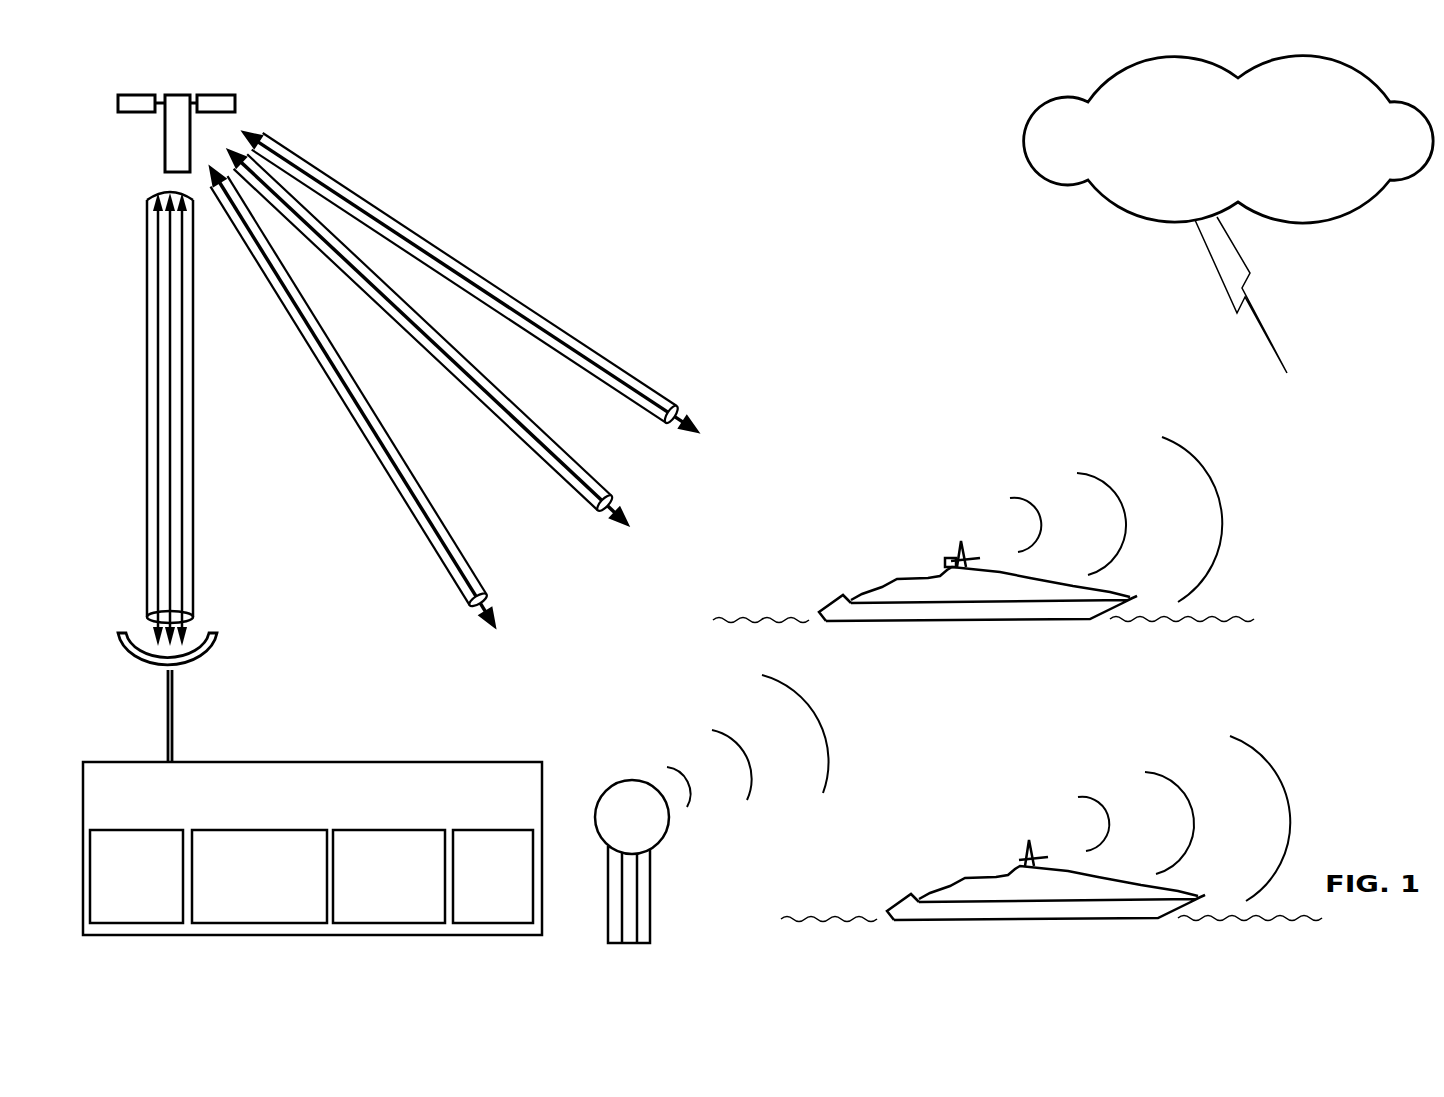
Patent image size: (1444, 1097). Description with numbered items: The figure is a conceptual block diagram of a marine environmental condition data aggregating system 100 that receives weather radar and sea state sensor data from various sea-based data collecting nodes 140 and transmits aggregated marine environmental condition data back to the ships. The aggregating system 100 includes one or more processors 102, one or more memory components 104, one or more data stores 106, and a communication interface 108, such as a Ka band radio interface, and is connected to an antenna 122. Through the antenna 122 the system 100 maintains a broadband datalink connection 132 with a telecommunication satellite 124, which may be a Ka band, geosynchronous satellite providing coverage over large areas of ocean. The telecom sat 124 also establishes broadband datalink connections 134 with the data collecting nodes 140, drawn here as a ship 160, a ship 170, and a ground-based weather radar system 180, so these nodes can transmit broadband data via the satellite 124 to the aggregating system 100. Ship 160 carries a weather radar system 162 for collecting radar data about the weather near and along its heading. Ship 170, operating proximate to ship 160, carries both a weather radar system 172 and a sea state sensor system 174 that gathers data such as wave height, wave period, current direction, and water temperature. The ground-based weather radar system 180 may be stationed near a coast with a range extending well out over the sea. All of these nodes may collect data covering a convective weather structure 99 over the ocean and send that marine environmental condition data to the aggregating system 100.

The telecommunication satellite 124 is at (310, 124).
The broadband datalink connections 134 is at (454, 379).
The broadband datalink connection 132 is at (219, 419).
The antenna 122 is at (270, 697).
The marine environmental condition data aggregating system 100 is at (475, 817).
The processors 102 is at (157, 900).
The memory components 104 is at (278, 900).
The data stores 106 is at (408, 914).
The communication interface 108 is at (513, 900).
The data collecting nodes 140 is at (657, 143).
The convective weather structure 99 is at (1114, 214).
The ground-based weather radar system 180 is at (694, 751).
The ship 170 is at (983, 452).
The weather radar system 172 is at (1086, 475).
The sea state sensor system 174 is at (888, 424).
The ship 160 is at (1051, 787).
The weather radar system 162 is at (1154, 776).